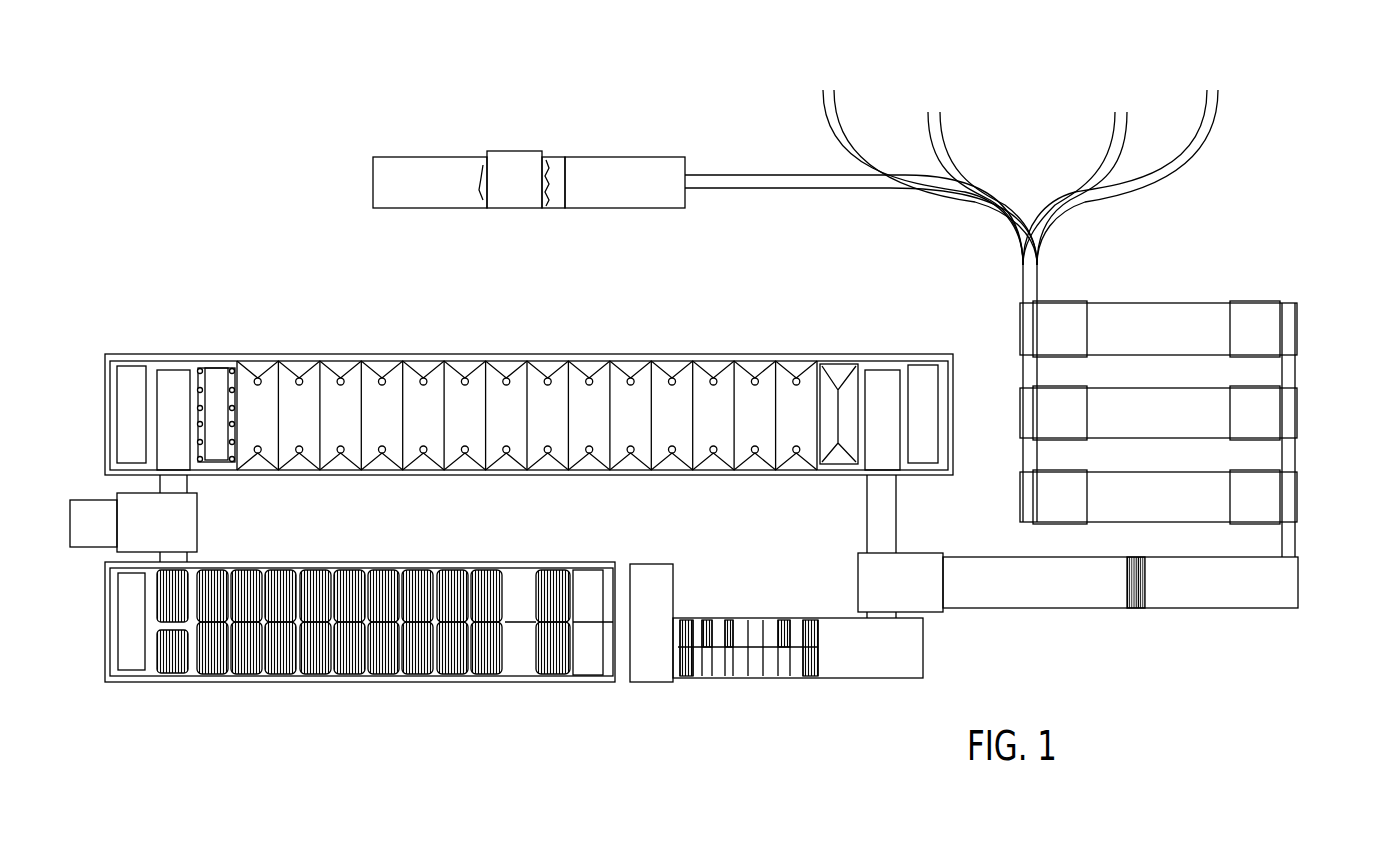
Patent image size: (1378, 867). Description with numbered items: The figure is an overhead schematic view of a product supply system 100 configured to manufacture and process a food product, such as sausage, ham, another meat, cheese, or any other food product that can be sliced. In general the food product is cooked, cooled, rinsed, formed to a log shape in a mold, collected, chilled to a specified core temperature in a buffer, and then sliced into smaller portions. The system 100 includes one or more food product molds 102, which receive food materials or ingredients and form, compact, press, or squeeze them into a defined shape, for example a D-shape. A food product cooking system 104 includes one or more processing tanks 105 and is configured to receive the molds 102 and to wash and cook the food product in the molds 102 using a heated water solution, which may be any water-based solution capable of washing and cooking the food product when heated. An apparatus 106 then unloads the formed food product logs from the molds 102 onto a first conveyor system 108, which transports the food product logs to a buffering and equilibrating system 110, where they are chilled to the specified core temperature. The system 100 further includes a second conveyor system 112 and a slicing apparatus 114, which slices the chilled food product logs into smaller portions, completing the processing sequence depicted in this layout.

The product supply system 100 is at (294, 140).
The food product molds 102 is at (176, 672).
The food product cooking system 104 is at (218, 335).
The processing tanks 105 is at (257, 470).
The apparatus to unload food product logs 106 is at (865, 583).
The first conveyor system 108 is at (973, 595).
The buffering and equilibrating system 110 is at (1300, 440).
The second conveyor system 112 is at (1028, 284).
The slicing apparatus 114 is at (520, 209).